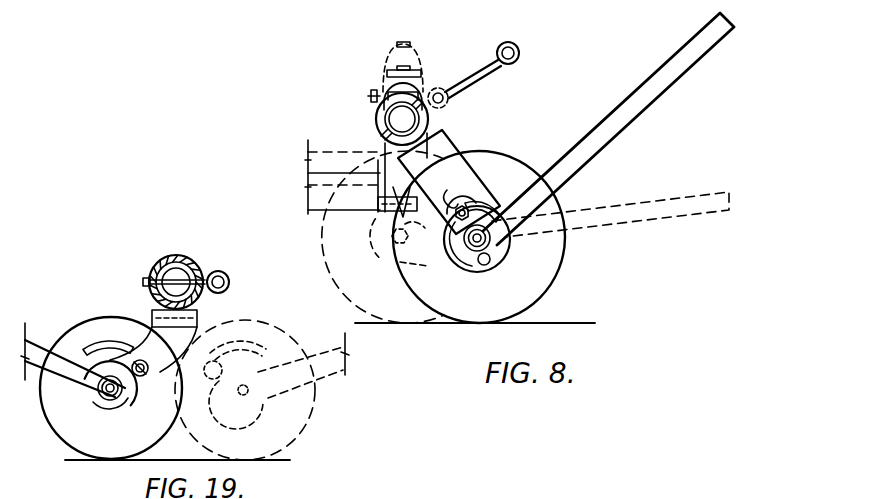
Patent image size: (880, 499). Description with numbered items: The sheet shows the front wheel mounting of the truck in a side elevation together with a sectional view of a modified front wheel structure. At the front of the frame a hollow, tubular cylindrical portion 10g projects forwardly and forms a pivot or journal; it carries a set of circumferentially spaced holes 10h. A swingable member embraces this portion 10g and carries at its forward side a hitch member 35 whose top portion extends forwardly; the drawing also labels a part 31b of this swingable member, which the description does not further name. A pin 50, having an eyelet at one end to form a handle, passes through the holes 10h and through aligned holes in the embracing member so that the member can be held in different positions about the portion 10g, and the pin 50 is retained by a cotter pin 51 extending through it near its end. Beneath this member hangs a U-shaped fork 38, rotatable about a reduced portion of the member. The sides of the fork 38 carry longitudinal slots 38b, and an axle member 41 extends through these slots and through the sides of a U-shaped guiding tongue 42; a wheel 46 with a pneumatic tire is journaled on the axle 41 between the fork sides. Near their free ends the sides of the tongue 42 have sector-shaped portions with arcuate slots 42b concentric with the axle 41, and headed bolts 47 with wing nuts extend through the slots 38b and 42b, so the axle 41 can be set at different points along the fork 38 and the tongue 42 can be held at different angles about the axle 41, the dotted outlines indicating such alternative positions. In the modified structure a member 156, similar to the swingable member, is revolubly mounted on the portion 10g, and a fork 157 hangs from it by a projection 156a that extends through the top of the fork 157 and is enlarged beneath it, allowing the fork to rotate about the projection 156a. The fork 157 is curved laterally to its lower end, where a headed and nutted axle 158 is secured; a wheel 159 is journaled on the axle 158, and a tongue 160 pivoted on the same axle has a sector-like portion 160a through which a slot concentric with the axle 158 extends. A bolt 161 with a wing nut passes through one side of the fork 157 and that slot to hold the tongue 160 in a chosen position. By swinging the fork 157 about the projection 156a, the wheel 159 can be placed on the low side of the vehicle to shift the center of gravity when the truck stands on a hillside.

In FIG. 8, the hitch member 35 is at (400, 84).
In FIG. 8, the cotter pin 51 is at (451, 84).
In FIG. 8, the pin 50 is at (462, 93).
In FIG. 8, the post 31b is at (382, 135).
In FIG. 8, the holes 10h is at (430, 117).
In FIG. 8, the fork 38 is at (445, 152).
In FIG. 8, the slots 38b is at (464, 192).
In FIG. 8, the arcuate slots 42b is at (480, 200).
In FIG. 8, the headed bolts 47 is at (447, 203).
In FIG. 8, the axle member 41 is at (455, 268).
In FIG. 8, the wheel 46 is at (566, 249).
In FIG. 8, the guiding tongue 42 is at (675, 70).
In FIG. 19, the member 156 is at (165, 259).
In FIG. 19, the portion 10g is at (198, 265).
In FIG. 19, the fork 157 is at (158, 330).
In FIG. 19, the tongue 160 is at (38, 355).
In FIG. 19, the sector-like portion 160a is at (100, 352).
In FIG. 19, the projection 156a is at (204, 314).
In FIG. 19, the axle 158 is at (86, 398).
In FIG. 19, the bolt 161 is at (148, 382).
In FIG. 19, the wheel 159 is at (58, 422).